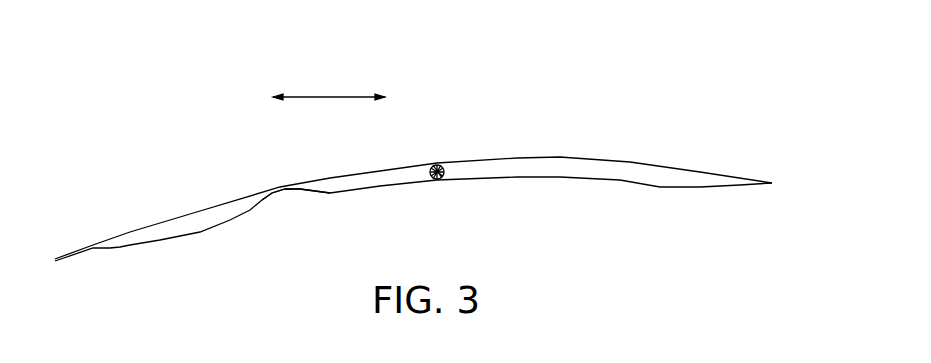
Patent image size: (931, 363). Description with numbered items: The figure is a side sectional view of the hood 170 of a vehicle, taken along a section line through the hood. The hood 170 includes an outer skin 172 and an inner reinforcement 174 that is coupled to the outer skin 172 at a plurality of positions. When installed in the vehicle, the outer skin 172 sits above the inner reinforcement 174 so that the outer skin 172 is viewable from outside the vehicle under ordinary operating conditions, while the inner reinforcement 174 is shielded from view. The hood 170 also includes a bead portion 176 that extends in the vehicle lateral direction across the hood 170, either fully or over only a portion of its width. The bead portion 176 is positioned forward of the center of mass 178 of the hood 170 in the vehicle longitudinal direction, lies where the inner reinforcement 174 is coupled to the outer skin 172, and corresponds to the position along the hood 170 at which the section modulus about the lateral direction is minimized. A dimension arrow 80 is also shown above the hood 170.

The chord direction / width 80 is at (325, 95).
The hood 170 is at (413, 157).
The outer skin 172 is at (633, 160).
The inner reinforcement 174 is at (642, 183).
The bead portion 176 is at (297, 200).
The center of mass 178 is at (445, 180).